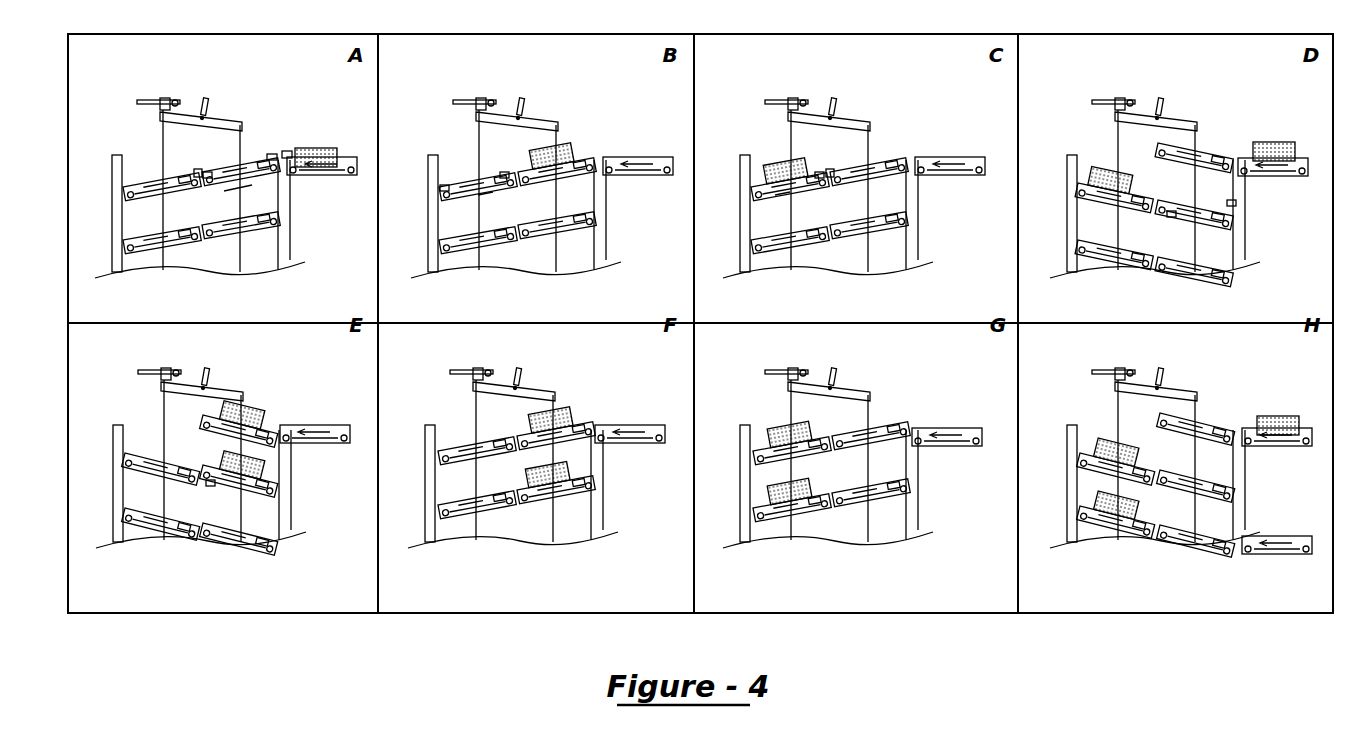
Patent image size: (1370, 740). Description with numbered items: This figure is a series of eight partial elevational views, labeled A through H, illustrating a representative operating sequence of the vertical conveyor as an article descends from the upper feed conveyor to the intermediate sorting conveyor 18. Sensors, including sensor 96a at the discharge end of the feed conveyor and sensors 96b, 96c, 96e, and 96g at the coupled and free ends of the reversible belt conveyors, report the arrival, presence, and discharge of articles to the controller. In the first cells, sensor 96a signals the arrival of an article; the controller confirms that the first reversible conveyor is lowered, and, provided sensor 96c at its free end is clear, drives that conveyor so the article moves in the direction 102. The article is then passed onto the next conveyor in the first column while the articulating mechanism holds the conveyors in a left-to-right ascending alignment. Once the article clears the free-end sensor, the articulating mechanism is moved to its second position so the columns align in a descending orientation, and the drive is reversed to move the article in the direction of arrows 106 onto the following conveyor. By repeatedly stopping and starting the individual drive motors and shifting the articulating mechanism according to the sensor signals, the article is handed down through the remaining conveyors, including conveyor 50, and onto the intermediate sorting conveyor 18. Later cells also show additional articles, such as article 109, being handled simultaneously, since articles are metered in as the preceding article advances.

The intermediate sorting conveyor 18 is at (1277, 521).
The conveyor 50 is at (1170, 563).
The sensor 96a is at (299, 113).
The sensor 96b is at (268, 100).
The sensor 96c is at (210, 153).
The sensor 96e is at (412, 211).
The sensor 96g is at (1273, 205).
The direction 102 is at (215, 201).
The direction 106 is at (1133, 164).
The article 109 is at (1260, 397).